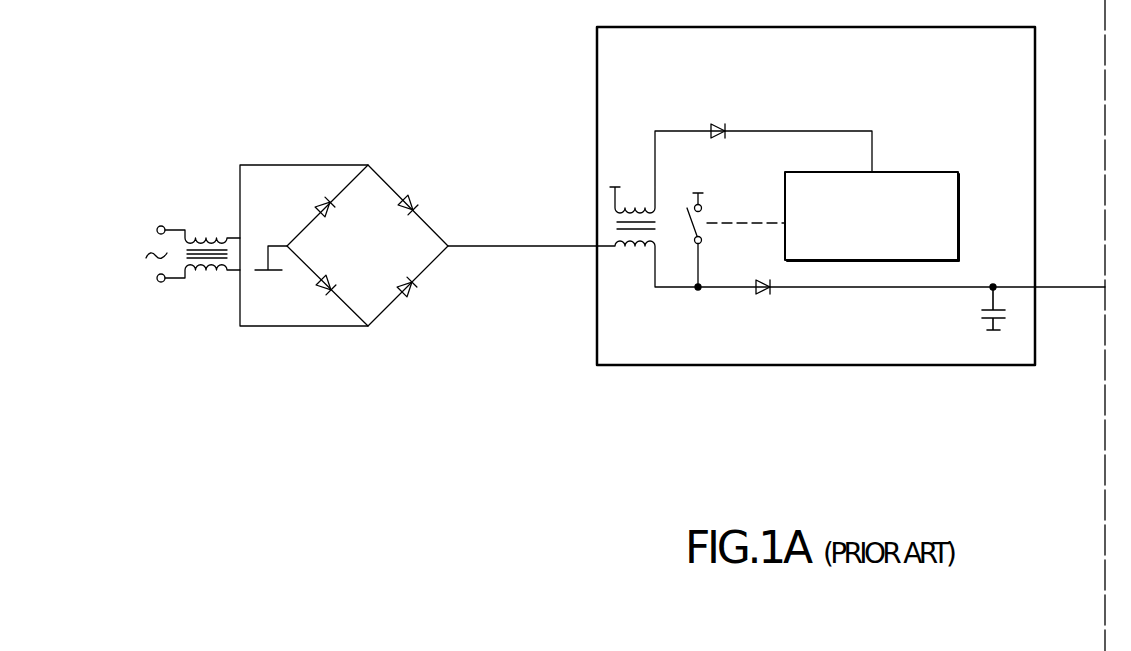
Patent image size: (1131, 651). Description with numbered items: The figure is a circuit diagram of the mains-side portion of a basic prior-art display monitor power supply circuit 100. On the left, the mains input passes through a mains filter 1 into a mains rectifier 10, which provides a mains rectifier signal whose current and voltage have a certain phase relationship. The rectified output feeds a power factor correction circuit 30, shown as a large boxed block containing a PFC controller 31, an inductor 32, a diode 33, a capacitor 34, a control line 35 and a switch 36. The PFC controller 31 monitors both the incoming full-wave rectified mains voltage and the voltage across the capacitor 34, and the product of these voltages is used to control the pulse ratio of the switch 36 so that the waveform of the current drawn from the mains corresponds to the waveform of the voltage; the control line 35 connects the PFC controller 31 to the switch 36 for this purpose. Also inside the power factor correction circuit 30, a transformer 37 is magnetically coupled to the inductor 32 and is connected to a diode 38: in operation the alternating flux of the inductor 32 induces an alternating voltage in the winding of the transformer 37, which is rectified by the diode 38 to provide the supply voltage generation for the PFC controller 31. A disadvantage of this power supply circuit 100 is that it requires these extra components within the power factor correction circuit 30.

The power supply circuit 100 is at (312, 60).
The mains filter 1 is at (202, 265).
The mains rectifier 10 is at (383, 170).
The power factor correction circuit 30 is at (597, 83).
The PFC controller 31 is at (905, 171).
The inductor 32 is at (620, 247).
The diode 33 is at (755, 292).
The capacitor 34 is at (993, 286).
The control line 35 is at (743, 224).
The switch 36 is at (691, 225).
The transformer 37 is at (632, 192).
The diode 38 is at (713, 125).